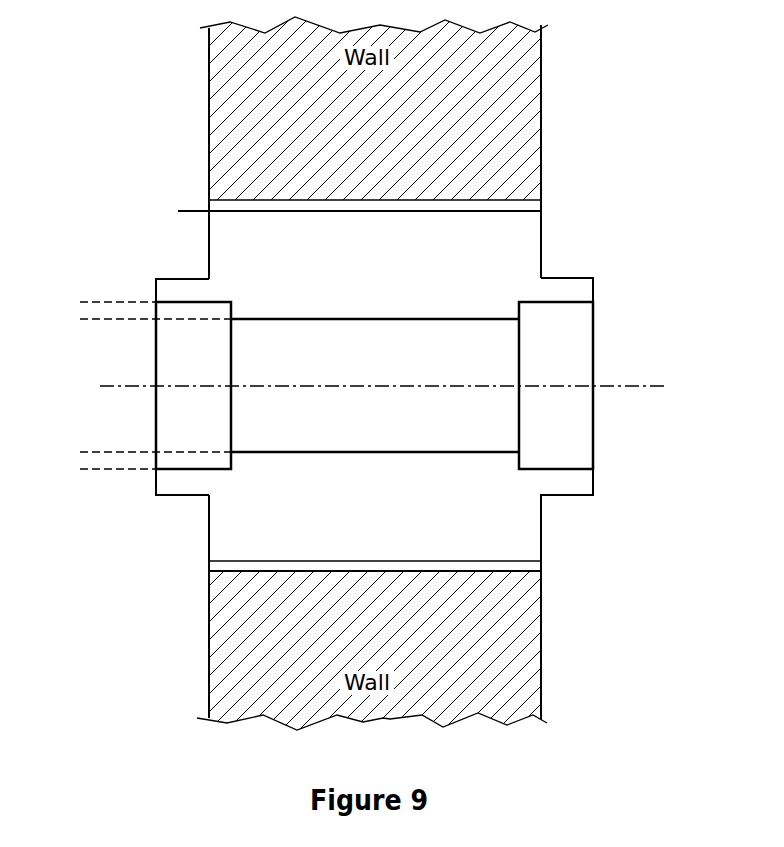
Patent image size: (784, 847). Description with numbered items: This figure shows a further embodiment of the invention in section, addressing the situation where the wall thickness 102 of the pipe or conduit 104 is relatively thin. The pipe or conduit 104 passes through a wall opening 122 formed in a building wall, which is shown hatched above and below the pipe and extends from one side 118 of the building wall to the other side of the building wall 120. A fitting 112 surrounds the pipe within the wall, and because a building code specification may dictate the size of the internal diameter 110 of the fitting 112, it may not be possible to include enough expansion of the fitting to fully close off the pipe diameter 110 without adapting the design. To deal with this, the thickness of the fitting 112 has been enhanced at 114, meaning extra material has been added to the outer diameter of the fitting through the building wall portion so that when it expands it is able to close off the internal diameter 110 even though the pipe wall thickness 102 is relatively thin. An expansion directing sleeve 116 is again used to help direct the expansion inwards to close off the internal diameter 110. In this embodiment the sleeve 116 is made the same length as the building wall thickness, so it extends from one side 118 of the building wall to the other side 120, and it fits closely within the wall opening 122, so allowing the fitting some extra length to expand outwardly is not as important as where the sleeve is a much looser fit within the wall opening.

The wall thickness 102 is at (188, 314).
The pipe or conduit 104 is at (100, 470).
The internal diameter 110 is at (386, 452).
The fitting 112 is at (590, 291).
The enhanced thickness 114 is at (188, 211).
The expansion directing sleeve 116 is at (209, 210).
The one side of building wall 118 is at (209, 100).
The other side of building wall 120 is at (541, 72).
The wall opening 122 is at (497, 570).